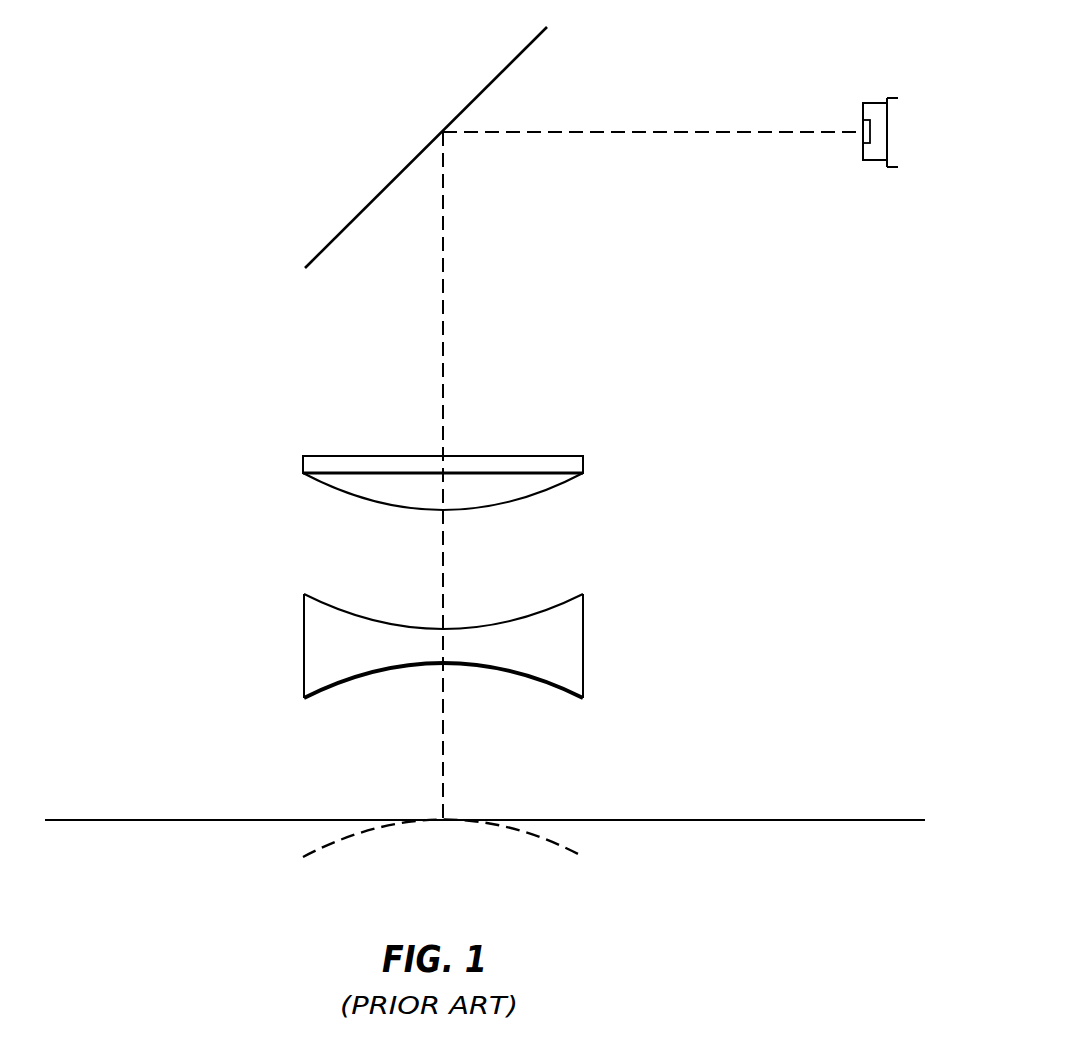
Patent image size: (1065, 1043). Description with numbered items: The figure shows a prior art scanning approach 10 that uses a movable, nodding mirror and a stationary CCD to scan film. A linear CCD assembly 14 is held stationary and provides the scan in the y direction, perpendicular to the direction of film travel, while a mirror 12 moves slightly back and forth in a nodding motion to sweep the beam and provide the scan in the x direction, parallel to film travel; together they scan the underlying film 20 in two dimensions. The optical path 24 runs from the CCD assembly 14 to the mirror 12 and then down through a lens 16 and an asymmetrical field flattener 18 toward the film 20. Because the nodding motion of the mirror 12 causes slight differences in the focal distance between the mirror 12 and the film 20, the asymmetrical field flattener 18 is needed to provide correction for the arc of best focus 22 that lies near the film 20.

The prior art optical system 10 is at (287, 72).
The mirror 12 is at (362, 208).
The linear CCD assembly 14 is at (897, 97).
The first lens 16 is at (413, 456).
The asymmetrical field flattener 18 is at (568, 600).
The film 20 is at (254, 818).
The arc of best focus 22 is at (530, 836).
The optical axis / beam 24 is at (697, 131).